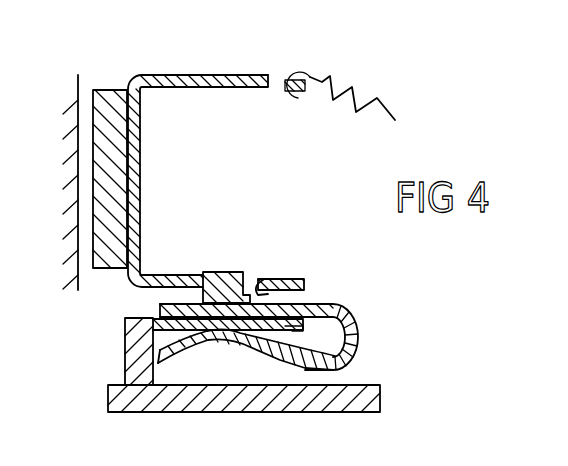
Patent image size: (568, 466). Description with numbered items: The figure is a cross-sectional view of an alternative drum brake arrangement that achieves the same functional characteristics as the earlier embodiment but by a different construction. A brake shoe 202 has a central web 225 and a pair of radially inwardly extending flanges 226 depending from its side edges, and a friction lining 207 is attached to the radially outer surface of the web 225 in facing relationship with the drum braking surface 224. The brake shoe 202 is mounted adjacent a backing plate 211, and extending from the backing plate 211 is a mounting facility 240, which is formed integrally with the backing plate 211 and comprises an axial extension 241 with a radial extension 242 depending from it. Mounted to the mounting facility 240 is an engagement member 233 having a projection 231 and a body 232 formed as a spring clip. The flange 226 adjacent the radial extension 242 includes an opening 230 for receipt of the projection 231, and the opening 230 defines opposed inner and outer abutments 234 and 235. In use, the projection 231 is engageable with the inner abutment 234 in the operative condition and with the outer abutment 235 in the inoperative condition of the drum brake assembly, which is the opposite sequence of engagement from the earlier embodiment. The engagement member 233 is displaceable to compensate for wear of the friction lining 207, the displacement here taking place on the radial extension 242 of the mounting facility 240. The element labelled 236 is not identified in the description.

The brake shoe 202 is at (259, 57).
The friction lining 207 is at (93, 220).
The backing plate 211 is at (342, 405).
The drum braking surface 224 is at (88, 82).
The central web 225 is at (137, 131).
The radially inwardly extending flange 226 is at (208, 79).
The opening 230 is at (259, 261).
The projection 231 is at (228, 282).
The body 232 is at (359, 337).
The engagement member 233 is at (357, 295).
The inner abutment 234 is at (262, 292).
The outer abutment 235 is at (210, 269).
The cable 236 is at (355, 93).
The mounting facility 240 is at (158, 347).
The axial extension 241 is at (138, 356).
The radial extension 242 is at (343, 362).